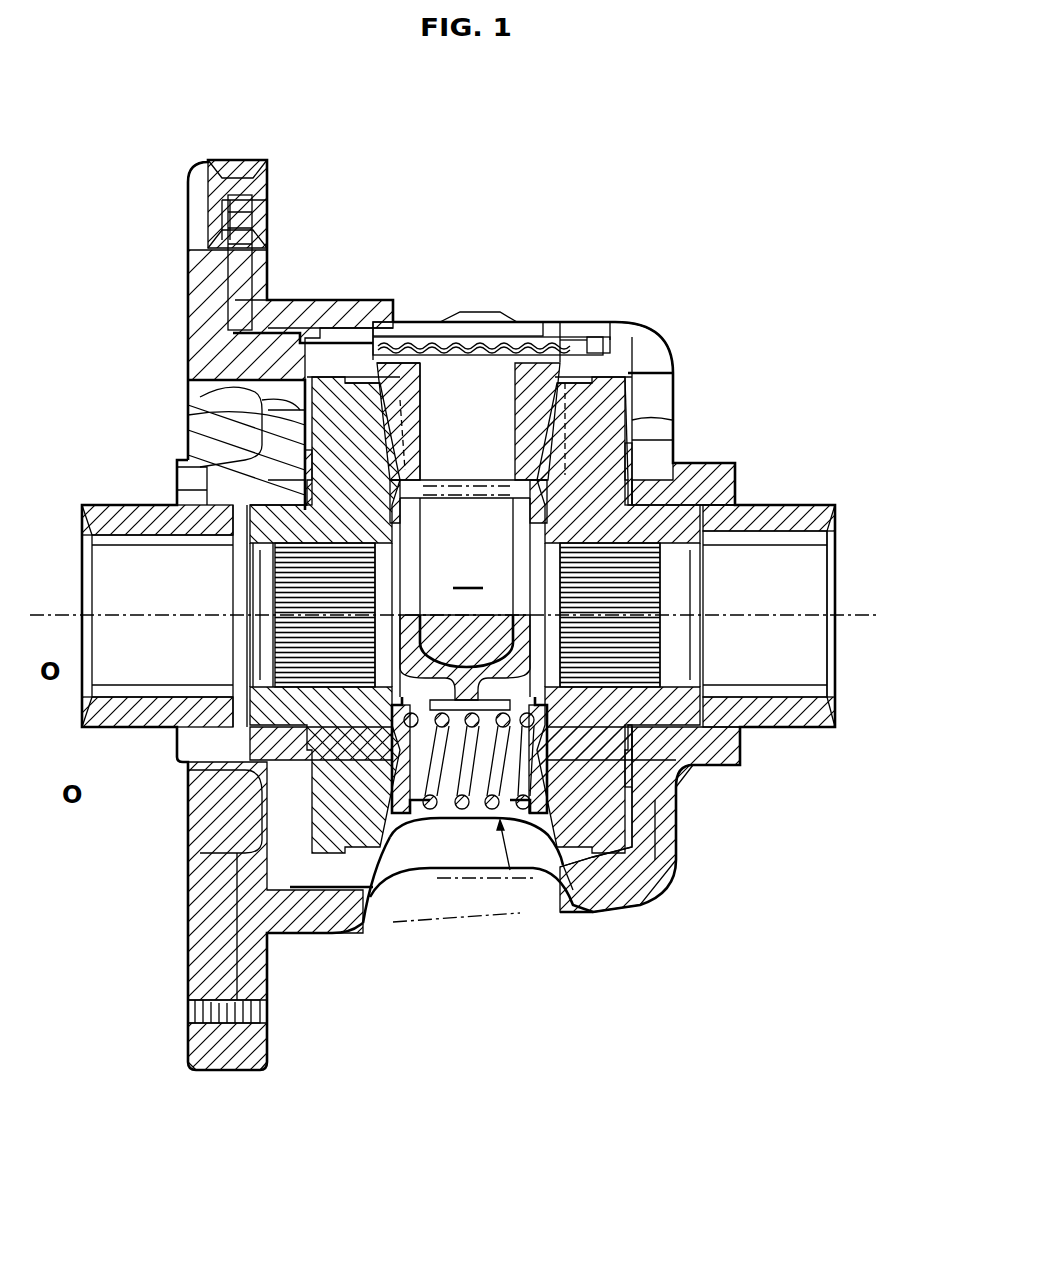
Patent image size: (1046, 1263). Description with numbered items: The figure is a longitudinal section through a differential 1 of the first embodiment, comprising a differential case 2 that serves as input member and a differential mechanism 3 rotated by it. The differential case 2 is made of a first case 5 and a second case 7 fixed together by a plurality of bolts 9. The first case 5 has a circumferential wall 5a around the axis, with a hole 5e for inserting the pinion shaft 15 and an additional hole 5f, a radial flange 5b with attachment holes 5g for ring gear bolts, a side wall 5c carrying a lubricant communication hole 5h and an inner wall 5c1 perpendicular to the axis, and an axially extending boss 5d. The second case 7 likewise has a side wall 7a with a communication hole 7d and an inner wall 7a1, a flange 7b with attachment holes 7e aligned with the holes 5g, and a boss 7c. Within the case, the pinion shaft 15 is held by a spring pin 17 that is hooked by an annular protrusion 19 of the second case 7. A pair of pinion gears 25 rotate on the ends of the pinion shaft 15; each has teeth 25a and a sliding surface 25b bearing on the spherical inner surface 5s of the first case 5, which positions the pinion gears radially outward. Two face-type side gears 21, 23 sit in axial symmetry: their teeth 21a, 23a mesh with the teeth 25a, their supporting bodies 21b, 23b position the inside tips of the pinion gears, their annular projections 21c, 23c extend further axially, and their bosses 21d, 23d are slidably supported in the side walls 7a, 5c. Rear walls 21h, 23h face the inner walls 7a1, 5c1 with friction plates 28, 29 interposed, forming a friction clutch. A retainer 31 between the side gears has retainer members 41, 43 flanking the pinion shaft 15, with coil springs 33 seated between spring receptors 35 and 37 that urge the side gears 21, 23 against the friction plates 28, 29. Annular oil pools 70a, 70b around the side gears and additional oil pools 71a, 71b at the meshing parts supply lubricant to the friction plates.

The differential 1 is at (705, 136).
The differential case 2 is at (213, 140).
The differential mechanism 3 is at (575, 284).
The first case 5 is at (618, 240).
The circumferential wall 5a is at (380, 360).
The flange 5b is at (245, 160).
The side wall 5c is at (660, 340).
The inner wall 5c1 is at (598, 352).
The boss 5d is at (822, 493).
The hole 5e is at (510, 322).
The additional hole 5f is at (380, 928).
The attachment hole 5g is at (265, 200).
The lubricant communication hole 5h is at (673, 400).
The inner surface 5s is at (520, 345).
The second case 7 is at (182, 313).
The side wall 7a is at (188, 340).
The inner wall 7a1 is at (300, 328).
The flange 7b is at (205, 162).
The boss 7c is at (82, 505).
The communication hole 7d is at (200, 397).
The attachment hole 7e is at (222, 212).
The bolt 9 is at (262, 1020).
The pinion shaft 15 is at (468, 590).
The spring pin 17 is at (528, 362).
The annular protrusion 19 is at (278, 328).
The side gear 21 is at (340, 376).
The teeth 21a is at (360, 382).
The supporting body 21b is at (305, 460).
The annular projection 21c is at (250, 505).
The boss 21d is at (177, 486).
The rear wall 21h is at (290, 300).
The side gear 23 is at (640, 385).
The teeth 23a is at (575, 382).
The supporting body 23b is at (640, 470).
The annular projection 23c is at (715, 505).
The boss 23d is at (735, 488).
The rear wall 23h is at (640, 410).
The pinion gear 25 is at (400, 362).
The teeth 25a is at (380, 362).
The sliding surface 25b is at (410, 362).
The friction plate 28 is at (268, 430).
The friction plate 29 is at (672, 440).
The retainer 31 is at (510, 870).
The coil spring 33 is at (458, 813).
The spring receptor 35 is at (400, 813).
The spring receptor 37 is at (537, 813).
The retainer member 41 is at (237, 770).
The retainer member 43 is at (676, 820).
The annular oil pool 70a is at (340, 376).
The annular oil pool 70b is at (590, 376).
The oil pool 71a is at (262, 400).
The oil pool 71b is at (650, 420).